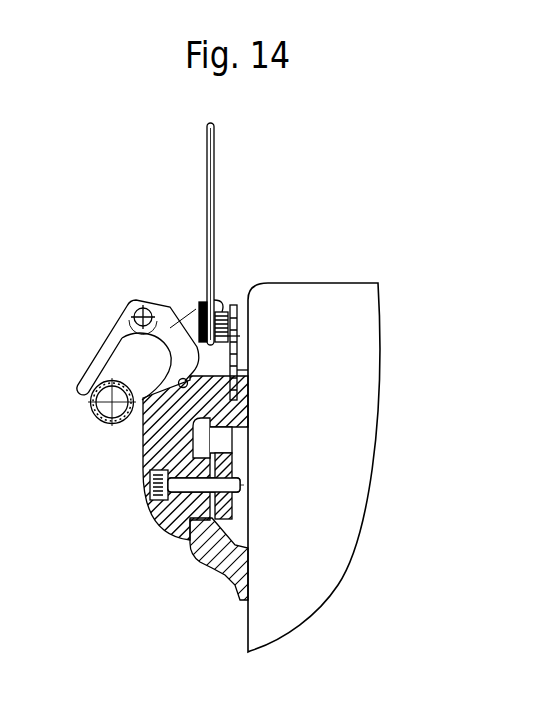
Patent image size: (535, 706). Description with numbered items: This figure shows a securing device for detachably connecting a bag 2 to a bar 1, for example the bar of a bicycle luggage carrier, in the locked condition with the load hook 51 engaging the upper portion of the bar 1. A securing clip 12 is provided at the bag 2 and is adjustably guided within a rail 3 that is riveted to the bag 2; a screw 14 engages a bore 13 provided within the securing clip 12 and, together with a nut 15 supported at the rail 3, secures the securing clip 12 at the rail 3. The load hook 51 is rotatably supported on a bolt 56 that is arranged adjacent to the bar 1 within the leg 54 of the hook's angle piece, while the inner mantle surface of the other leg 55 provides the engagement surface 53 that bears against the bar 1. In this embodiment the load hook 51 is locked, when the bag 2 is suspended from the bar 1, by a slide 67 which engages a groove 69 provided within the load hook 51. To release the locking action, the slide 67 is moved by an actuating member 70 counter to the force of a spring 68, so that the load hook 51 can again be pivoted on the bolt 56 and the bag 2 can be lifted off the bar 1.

The bar 1 is at (90, 406).
The bag 2 is at (331, 283).
The rail 3 is at (215, 558).
The securing clip 12 is at (143, 455).
The bore 13 is at (162, 513).
The screw 14 is at (152, 500).
The nut 15 is at (233, 505).
The load hook 51 is at (173, 305).
The engagement surface 53 is at (118, 337).
The leg 54 is at (103, 350).
The leg 55 is at (220, 300).
The bolt 56 is at (150, 306).
The slide 67 is at (230, 322).
The spring 68 is at (240, 316).
The groove 69 is at (244, 378).
The actuating member 70 is at (206, 136).